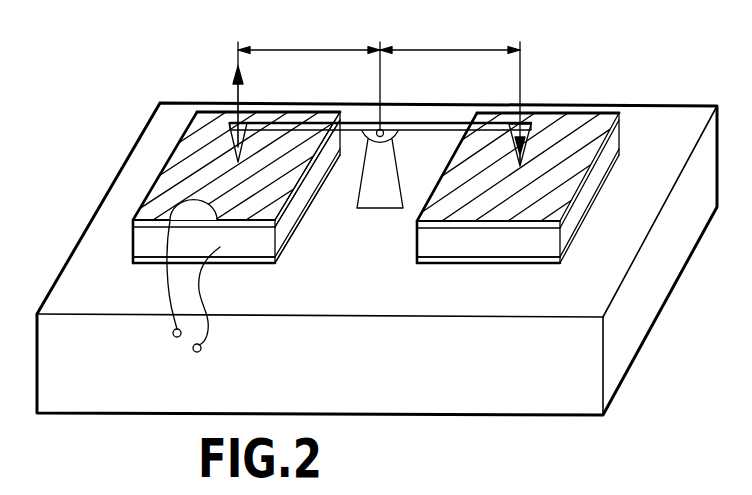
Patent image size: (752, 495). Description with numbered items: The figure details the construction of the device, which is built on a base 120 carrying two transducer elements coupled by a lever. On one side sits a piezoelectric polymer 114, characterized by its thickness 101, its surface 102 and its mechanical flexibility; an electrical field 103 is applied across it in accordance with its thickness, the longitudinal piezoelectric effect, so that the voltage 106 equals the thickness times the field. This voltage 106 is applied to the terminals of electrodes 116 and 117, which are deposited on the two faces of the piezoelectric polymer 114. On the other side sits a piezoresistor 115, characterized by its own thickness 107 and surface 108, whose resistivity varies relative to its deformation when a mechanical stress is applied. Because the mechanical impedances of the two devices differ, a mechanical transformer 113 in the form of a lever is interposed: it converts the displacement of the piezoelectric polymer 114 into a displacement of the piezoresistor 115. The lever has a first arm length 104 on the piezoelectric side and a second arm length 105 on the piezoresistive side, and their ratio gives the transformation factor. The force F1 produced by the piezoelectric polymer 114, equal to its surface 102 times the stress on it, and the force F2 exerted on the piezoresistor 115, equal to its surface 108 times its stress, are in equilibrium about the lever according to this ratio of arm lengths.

The thickness of the piezoelectric polymer 101 is at (108, 212).
The surface of the piezoelectric polymer 102 is at (175, 163).
The electrical field 103 is at (251, 236).
The first lever arm length 104 is at (309, 74).
The second lever arm length 105 is at (450, 78).
The voltage 106 is at (202, 360).
The thickness of the piezoresistor 107 is at (598, 212).
The surface of the piezoresistor 108 is at (583, 147).
The mechanical transformer 113 is at (389, 121).
The piezoelectric polymer 114 is at (208, 260).
The piezoresistor 115 is at (474, 247).
The first electrode 116 is at (305, 170).
The second electrode 117 is at (302, 217).
The base 120 is at (630, 338).
The force on the piezoelectric device F1 is at (237, 88).
The force on the piezoresistive device F2 is at (521, 89).